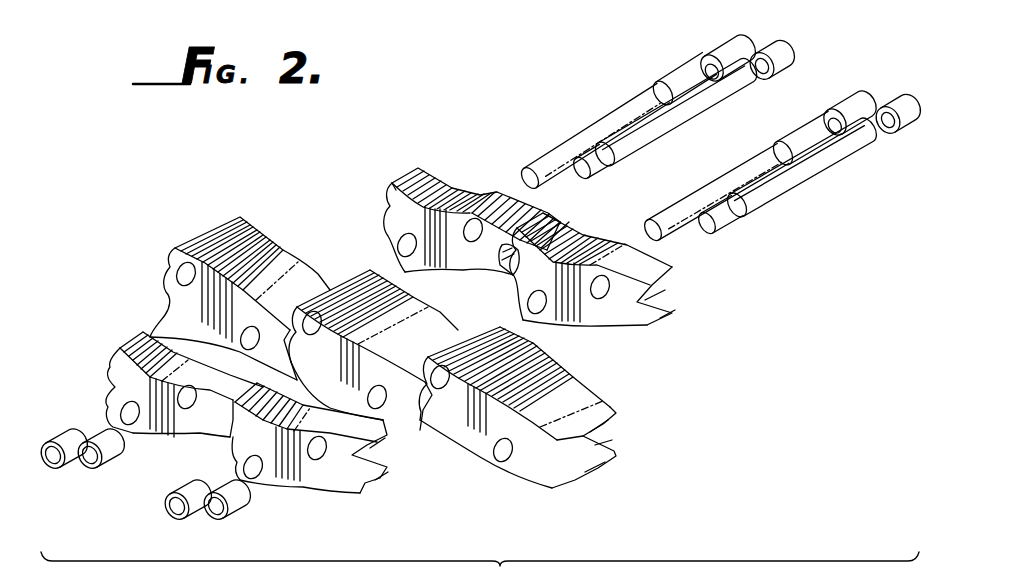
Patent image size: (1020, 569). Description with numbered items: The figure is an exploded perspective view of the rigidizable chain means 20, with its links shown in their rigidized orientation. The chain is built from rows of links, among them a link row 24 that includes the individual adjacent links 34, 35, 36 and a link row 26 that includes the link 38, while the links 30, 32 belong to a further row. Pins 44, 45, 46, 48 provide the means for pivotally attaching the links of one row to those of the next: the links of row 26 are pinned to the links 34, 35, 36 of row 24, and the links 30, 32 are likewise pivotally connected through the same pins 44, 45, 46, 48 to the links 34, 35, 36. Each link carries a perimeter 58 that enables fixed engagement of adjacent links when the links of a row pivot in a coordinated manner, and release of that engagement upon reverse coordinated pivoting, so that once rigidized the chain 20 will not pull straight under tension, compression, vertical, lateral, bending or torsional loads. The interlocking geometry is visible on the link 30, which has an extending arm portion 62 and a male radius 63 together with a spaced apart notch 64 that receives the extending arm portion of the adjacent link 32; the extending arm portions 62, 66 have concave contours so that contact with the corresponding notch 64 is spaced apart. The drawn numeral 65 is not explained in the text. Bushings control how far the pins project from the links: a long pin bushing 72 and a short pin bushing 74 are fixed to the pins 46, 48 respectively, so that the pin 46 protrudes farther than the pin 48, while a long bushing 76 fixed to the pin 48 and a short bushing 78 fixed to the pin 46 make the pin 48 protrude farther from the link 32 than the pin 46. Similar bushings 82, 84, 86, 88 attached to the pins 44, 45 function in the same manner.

The rigidizable chain means 20 is at (652, 378).
The link row 24 is at (212, 226).
The link row 26 is at (120, 343).
The link 30 is at (447, 267).
The link 32 is at (590, 315).
The link 34 is at (180, 302).
The link 35 is at (330, 383).
The link 36 is at (473, 453).
The link 38 is at (187, 427).
The pin 44 is at (687, 117).
The pin 45 is at (610, 123).
The pin 46 is at (737, 175).
The pin 48 is at (787, 190).
The perimeter of link 58 is at (263, 248).
The extending arm portion 62 is at (392, 193).
The male radius 63 is at (388, 236).
The notch 64 is at (515, 272).
The recess on link end 65 is at (518, 300).
The extending arm portion 66 is at (550, 221).
The long pin bushing 72 is at (167, 493).
The short pin bushing 74 is at (247, 511).
The long bushing 76 is at (907, 135).
The short bushing 78 is at (853, 103).
The bushing 82 is at (113, 460).
The bushing 84 is at (60, 437).
The bushing 86 is at (787, 53).
The bushing 88 is at (727, 53).